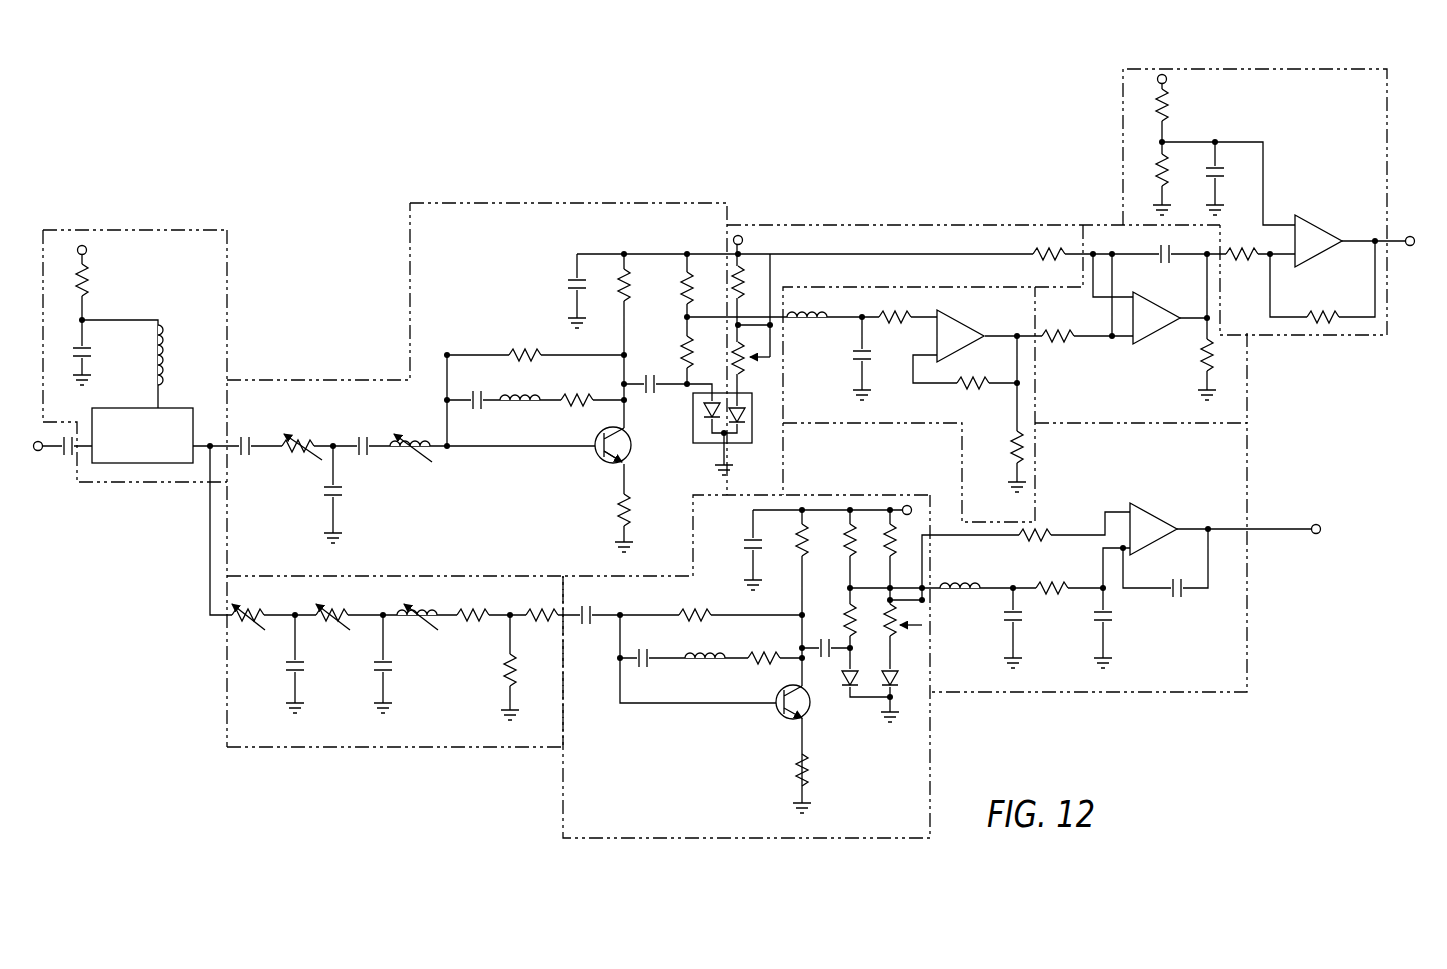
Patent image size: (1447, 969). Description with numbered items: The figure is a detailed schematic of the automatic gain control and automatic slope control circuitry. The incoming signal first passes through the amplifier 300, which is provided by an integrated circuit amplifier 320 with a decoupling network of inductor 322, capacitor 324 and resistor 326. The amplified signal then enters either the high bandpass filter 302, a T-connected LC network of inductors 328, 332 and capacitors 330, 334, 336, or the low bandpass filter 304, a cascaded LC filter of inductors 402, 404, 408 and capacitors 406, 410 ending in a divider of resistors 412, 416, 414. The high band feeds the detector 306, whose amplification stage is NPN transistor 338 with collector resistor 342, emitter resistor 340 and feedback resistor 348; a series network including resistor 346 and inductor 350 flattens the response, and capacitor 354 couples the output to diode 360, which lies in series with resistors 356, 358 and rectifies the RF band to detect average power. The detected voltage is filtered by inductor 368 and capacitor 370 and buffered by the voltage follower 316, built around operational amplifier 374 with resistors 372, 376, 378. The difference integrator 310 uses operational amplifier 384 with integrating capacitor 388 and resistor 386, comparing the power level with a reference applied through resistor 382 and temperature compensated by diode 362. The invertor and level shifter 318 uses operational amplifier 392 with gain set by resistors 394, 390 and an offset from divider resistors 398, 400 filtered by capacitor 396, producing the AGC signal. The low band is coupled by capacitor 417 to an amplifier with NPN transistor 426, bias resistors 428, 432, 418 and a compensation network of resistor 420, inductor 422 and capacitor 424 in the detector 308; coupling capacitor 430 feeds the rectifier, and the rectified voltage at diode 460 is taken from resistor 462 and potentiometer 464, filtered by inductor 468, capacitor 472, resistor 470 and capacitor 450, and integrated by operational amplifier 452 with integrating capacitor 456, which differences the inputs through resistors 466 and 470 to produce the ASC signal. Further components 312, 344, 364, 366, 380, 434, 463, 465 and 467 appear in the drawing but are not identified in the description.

The amplifier 300 is at (183, 230).
The high bandpass filter 302 is at (285, 380).
The low bandpass filter 304 is at (476, 747).
The detector 306 is at (645, 203).
The detector 308 is at (732, 838).
The difference integrator 310 is at (1250, 410).
The ASC section 312 is at (1138, 692).
The voltage follower 316 is at (930, 287).
The invertor and level shifter 318 is at (1285, 69).
The integrated circuit amplifier 320 is at (160, 408).
The inductor 322 is at (163, 345).
The capacitor 324 is at (120, 345).
The resistor 326 is at (88, 282).
The inductor 328 is at (410, 452).
The capacitor 330 is at (412, 440).
The inductor 332 is at (296, 440).
The capacitor 334 is at (248, 440).
The capacitor 336 is at (330, 495).
The NPN transistor 338 is at (598, 460).
The emitter resistor 340 is at (628, 514).
The collector resistor 342 is at (624, 268).
The capacitor 344 is at (577, 287).
The resistor 346 is at (590, 372).
The feedback resistor 348 is at (525, 352).
The inductor 350 is at (525, 400).
The capacitor 354 is at (687, 370).
The resistor 356 is at (687, 268).
The resistor 358 is at (687, 340).
The diode 360 is at (706, 425).
The diode 362 is at (748, 428).
The potentiometer 364 is at (752, 372).
The resistor 366 is at (742, 290).
The inductor 368 is at (810, 312).
The capacitor 370 is at (858, 362).
The resistor 372 is at (902, 334).
The operational amplifier 374 is at (955, 325).
The resistor 376 is at (975, 390).
The resistor 378 is at (1020, 455).
The resistor 380 is at (1062, 345).
The resistor 382 is at (1044, 250).
The operational amplifier 384 is at (1160, 337).
The resistor 386 is at (1212, 358).
The integrating capacitor 388 is at (1160, 262).
The resistor 390 is at (1266, 262).
The operational amplifier 392 is at (1315, 222).
The resistor 394 is at (1330, 322).
The capacitor 396 is at (1222, 170).
The resistor 398 is at (1165, 120).
The resistor 400 is at (1160, 162).
The inductor 402 is at (262, 610).
The inductor 404 is at (348, 610).
The capacitor 406 is at (298, 664).
The inductor 408 is at (435, 610).
The capacitor 410 is at (380, 672).
The resistor 412 is at (470, 625).
The resistor 414 is at (540, 612).
The resistor 416 is at (508, 672).
The coupling capacitor 417 is at (590, 612).
The resistor 418 is at (716, 592).
The resistor 420 is at (768, 656).
The inductor 422 is at (648, 664).
The capacitor 424 is at (620, 688).
The NPN transistor 426 is at (778, 712).
The resistor 428 is at (800, 772).
The coupling capacitor 430 is at (820, 655).
The resistor 432 is at (802, 562).
The capacitor 434 is at (753, 546).
The capacitor 450 is at (1108, 618).
The operational amplifier 452 is at (1152, 520).
The integrating capacitor 456 is at (1177, 600).
The diode 460 is at (846, 690).
The resistor 462 is at (898, 682).
The resistor 463 is at (850, 600).
The potentiometer 464 is at (906, 628).
The resistor 465 is at (850, 524).
The resistor 466 is at (1040, 530).
The resistor 467 is at (890, 524).
The inductor 468 is at (950, 583).
The resistor 470 is at (1052, 583).
The capacitor 472 is at (1018, 618).